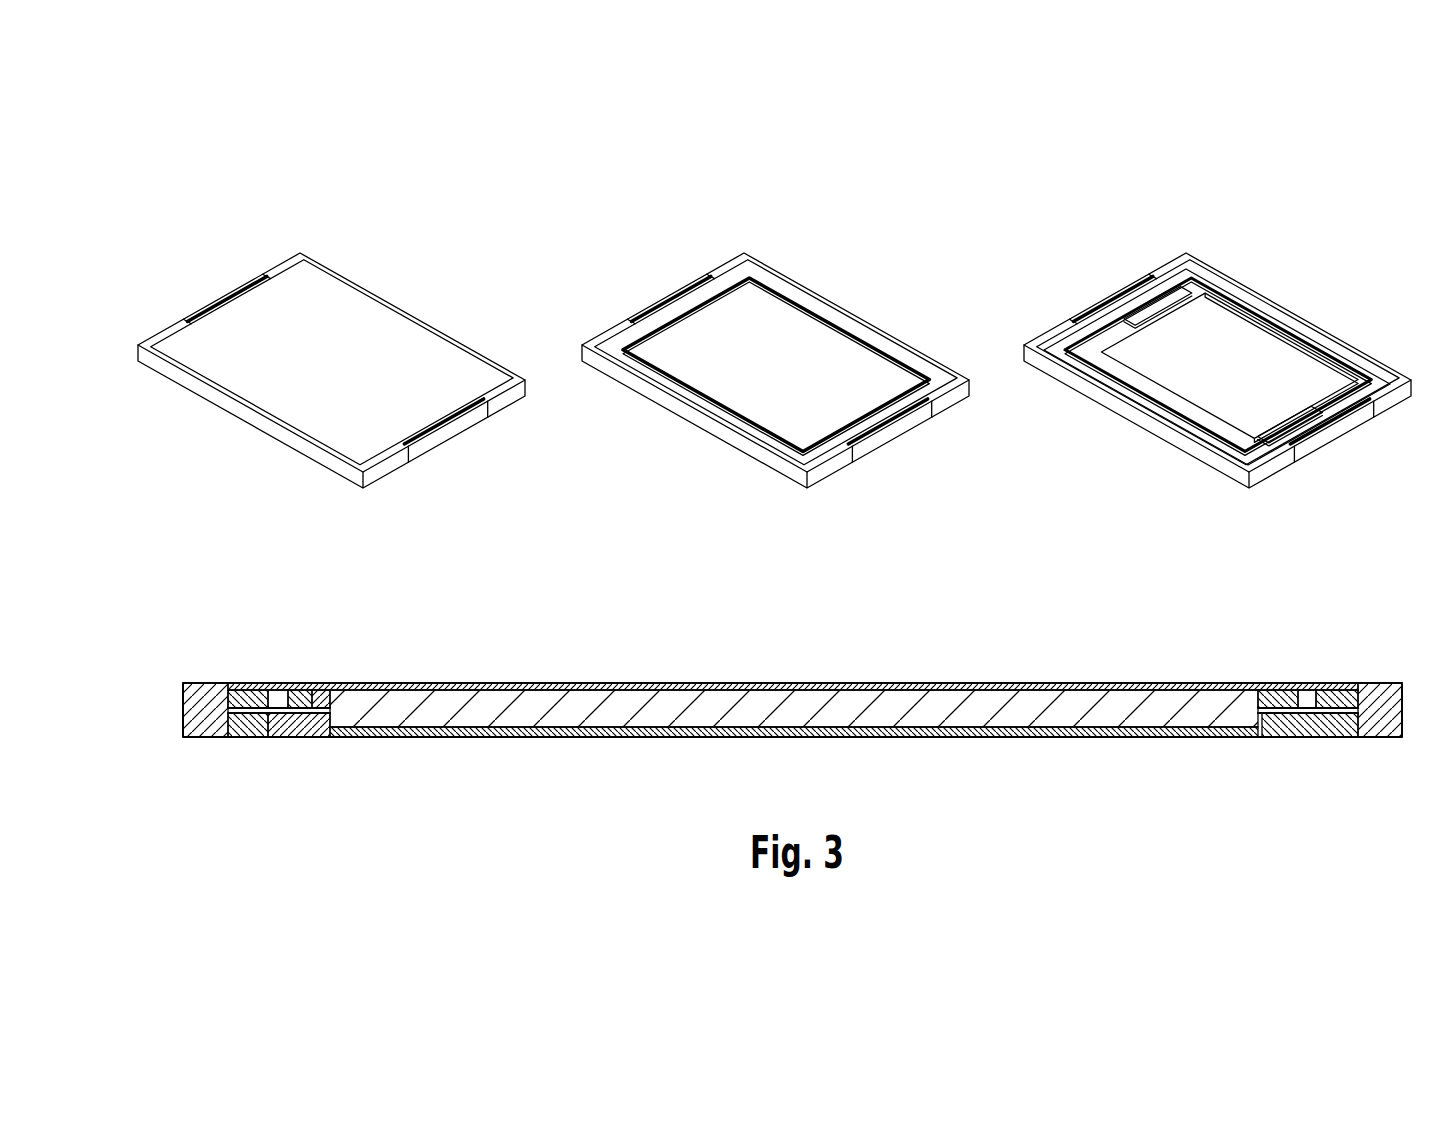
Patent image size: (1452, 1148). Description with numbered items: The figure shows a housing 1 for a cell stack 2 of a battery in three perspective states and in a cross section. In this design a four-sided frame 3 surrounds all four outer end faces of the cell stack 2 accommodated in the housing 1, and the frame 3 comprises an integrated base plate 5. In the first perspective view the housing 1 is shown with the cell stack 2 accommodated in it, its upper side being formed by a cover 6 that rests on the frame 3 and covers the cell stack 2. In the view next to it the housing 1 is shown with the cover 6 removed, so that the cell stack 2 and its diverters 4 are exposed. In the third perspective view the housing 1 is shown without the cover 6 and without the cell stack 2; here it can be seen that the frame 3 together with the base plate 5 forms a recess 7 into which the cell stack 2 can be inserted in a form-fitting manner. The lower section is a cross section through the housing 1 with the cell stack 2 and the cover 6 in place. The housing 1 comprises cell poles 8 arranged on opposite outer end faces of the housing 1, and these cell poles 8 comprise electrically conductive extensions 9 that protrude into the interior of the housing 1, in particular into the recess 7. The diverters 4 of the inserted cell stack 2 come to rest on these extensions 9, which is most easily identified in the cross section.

The housing 1 is at (238, 232).
The cell stack 2 is at (795, 420).
The frame 3 is at (241, 412).
The diverters 4 is at (660, 330).
The base plate 5 is at (1225, 350).
The cover 6 is at (340, 421).
The recess 7 is at (1235, 418).
The cell poles 8 is at (222, 300).
The electrically conductive extensions 9 is at (1165, 308).